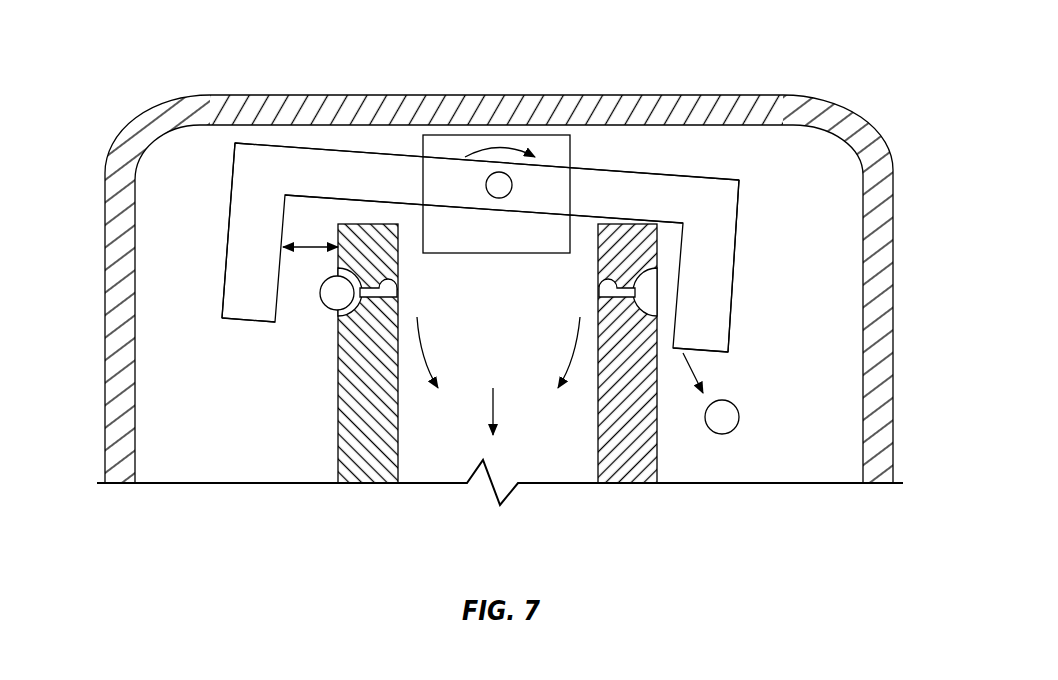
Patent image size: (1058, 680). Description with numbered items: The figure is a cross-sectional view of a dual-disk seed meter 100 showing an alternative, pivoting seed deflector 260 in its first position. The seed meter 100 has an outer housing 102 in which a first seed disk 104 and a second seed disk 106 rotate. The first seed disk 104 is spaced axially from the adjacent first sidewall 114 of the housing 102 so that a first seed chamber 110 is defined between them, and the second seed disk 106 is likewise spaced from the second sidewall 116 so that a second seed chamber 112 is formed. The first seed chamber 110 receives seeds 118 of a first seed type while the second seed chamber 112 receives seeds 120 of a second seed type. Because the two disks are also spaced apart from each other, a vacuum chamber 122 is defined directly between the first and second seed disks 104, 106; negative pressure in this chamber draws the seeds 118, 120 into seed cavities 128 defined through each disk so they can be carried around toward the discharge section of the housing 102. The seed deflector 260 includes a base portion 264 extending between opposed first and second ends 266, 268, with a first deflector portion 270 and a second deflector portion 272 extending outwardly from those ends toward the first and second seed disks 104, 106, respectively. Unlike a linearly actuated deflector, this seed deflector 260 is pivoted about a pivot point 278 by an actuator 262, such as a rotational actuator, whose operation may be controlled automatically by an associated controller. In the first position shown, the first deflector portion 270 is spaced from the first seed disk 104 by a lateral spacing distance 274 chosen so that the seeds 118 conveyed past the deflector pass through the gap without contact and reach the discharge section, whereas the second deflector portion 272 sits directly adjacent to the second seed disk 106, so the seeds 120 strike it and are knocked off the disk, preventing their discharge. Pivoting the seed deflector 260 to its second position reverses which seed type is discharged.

The seed meter 100 is at (102, 102).
The outer housing 102 is at (501, 272).
The first seed disk 104 is at (337, 440).
The second seed disk 106 is at (658, 443).
The first seed chamber 110 is at (182, 443).
The second seed chamber 112 is at (794, 443).
The first sidewall 114 is at (115, 363).
The second sidewall 116 is at (890, 368).
The seeds of a first seed type 118 is at (330, 298).
The seeds of a second seed type 120 is at (725, 410).
The vacuum chamber 122 is at (511, 375).
The seed cavities 128 is at (395, 277).
The seed deflector 260 is at (322, 148).
The actuator 262 is at (500, 135).
The base portion 264 is at (580, 180).
The first end 266 is at (235, 162).
The second end 268 is at (740, 195).
The first deflector portion 270 is at (250, 312).
The second deflector portion 272 is at (718, 293).
The lateral spacing distance 274 is at (312, 252).
The pivot point 278 is at (499, 198).